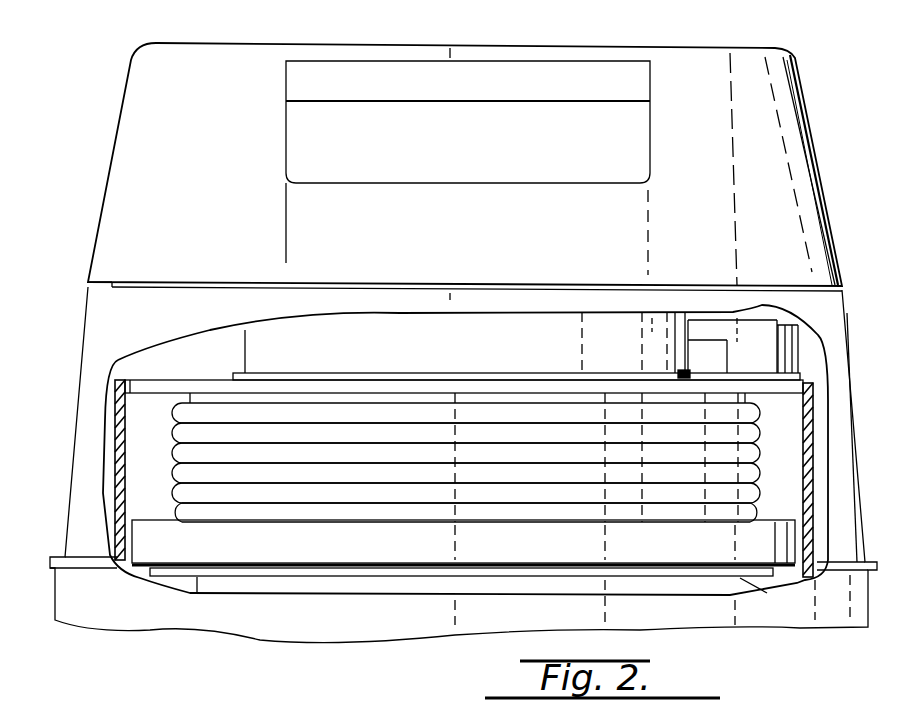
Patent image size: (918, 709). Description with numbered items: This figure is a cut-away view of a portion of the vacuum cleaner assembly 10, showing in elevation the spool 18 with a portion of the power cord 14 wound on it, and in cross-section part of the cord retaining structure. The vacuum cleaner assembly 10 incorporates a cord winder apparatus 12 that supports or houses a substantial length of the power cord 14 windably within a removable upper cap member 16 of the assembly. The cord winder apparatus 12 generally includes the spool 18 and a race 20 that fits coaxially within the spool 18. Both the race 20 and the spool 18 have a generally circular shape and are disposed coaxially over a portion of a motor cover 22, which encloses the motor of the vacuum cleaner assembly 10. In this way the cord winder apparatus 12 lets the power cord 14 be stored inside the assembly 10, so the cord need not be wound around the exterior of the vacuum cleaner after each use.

The vacuum cleaner assembly 10 is at (467, 321).
The cord winder apparatus 12 is at (812, 344).
The power cord 14 is at (162, 430).
The removable upper cap member 16 is at (113, 147).
The spool 18 is at (163, 385).
The race 20 is at (688, 375).
The motor cover 22 is at (242, 340).